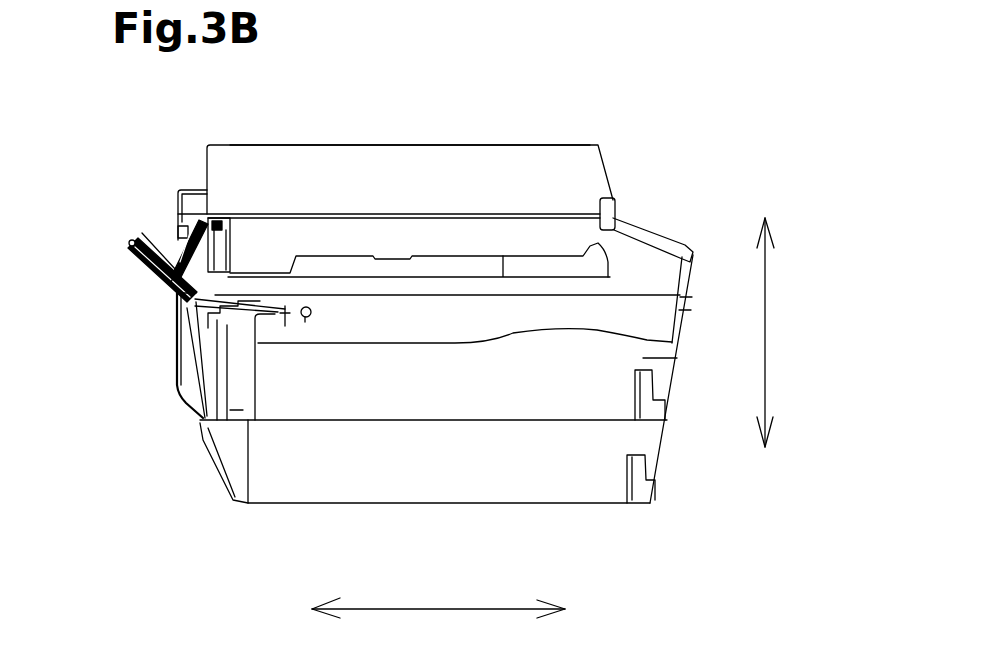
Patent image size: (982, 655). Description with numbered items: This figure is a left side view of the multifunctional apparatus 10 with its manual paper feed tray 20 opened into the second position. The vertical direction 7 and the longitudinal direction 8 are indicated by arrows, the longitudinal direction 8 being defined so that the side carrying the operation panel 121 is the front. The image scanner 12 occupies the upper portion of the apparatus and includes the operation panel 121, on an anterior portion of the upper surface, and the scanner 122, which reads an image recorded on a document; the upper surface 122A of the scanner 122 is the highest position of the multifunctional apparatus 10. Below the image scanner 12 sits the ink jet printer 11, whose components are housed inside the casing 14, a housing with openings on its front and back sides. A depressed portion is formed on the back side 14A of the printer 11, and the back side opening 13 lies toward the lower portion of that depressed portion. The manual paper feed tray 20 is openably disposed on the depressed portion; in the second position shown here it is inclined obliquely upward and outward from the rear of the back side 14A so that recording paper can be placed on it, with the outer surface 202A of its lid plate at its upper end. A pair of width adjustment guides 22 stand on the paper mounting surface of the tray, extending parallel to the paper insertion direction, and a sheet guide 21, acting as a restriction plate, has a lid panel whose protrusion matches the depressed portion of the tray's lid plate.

The multifunctional apparatus 10 is at (162, 108).
The ink jet printer 11 is at (158, 395).
The image scanner 12 is at (598, 133).
The scanner 122 is at (597, 178).
The upper surface of the scanner 122A is at (255, 144).
The operation panel 121 is at (662, 230).
The sheet guide 21 is at (177, 232).
The width adjustment guides 22 is at (148, 236).
The outer surface of the lid plate 202A is at (140, 240).
The back side opening 13 is at (153, 263).
The manual paper feed tray 20 is at (152, 287).
The back side 14A is at (177, 348).
The casing 14 is at (581, 503).
The longitudinal direction 8 is at (435, 608).
The vertical direction 7 is at (765, 332).